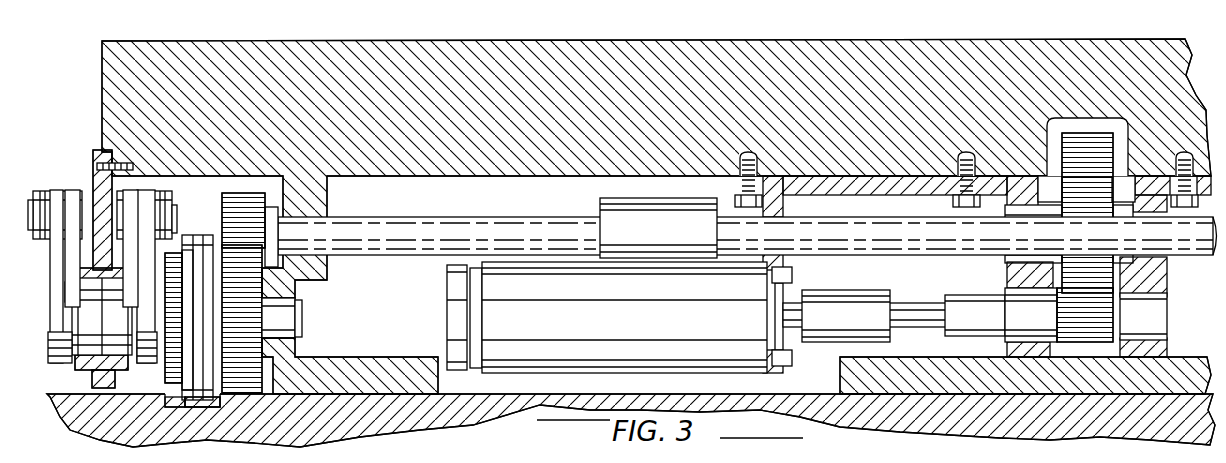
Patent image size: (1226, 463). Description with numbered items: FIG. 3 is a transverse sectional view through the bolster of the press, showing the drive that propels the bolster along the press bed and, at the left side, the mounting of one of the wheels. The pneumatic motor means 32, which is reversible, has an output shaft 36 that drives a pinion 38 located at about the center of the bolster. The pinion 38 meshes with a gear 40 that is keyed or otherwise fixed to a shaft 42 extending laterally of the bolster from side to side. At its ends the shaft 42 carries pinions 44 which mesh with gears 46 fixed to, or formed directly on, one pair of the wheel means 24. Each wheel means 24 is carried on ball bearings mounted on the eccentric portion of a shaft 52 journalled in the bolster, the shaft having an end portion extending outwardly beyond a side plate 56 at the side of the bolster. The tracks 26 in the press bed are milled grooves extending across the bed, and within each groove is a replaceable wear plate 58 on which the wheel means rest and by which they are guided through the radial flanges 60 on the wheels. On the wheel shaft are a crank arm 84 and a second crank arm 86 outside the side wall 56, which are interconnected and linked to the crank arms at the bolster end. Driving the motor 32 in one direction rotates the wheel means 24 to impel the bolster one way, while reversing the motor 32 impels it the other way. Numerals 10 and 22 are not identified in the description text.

The base 10 is at (62, 425).
The housing block 22 is at (101, 84).
The wheel means 24 is at (196, 238).
The tracks 26 is at (166, 397).
The pneumatic motor means 32 is at (455, 312).
The output shaft 36 is at (912, 305).
The pinion 38 is at (1060, 310).
The gear 40 is at (1060, 222).
The shaft 42 is at (826, 245).
The pinions 44 is at (222, 200).
The gears 46 is at (237, 318).
The shaft 52 is at (302, 322).
The side plate 56 is at (93, 183).
The wear plate 58 is at (205, 410).
The radial flanges 60 is at (180, 410).
The crank arm 84 is at (148, 273).
The second crank arm 86 is at (53, 273).